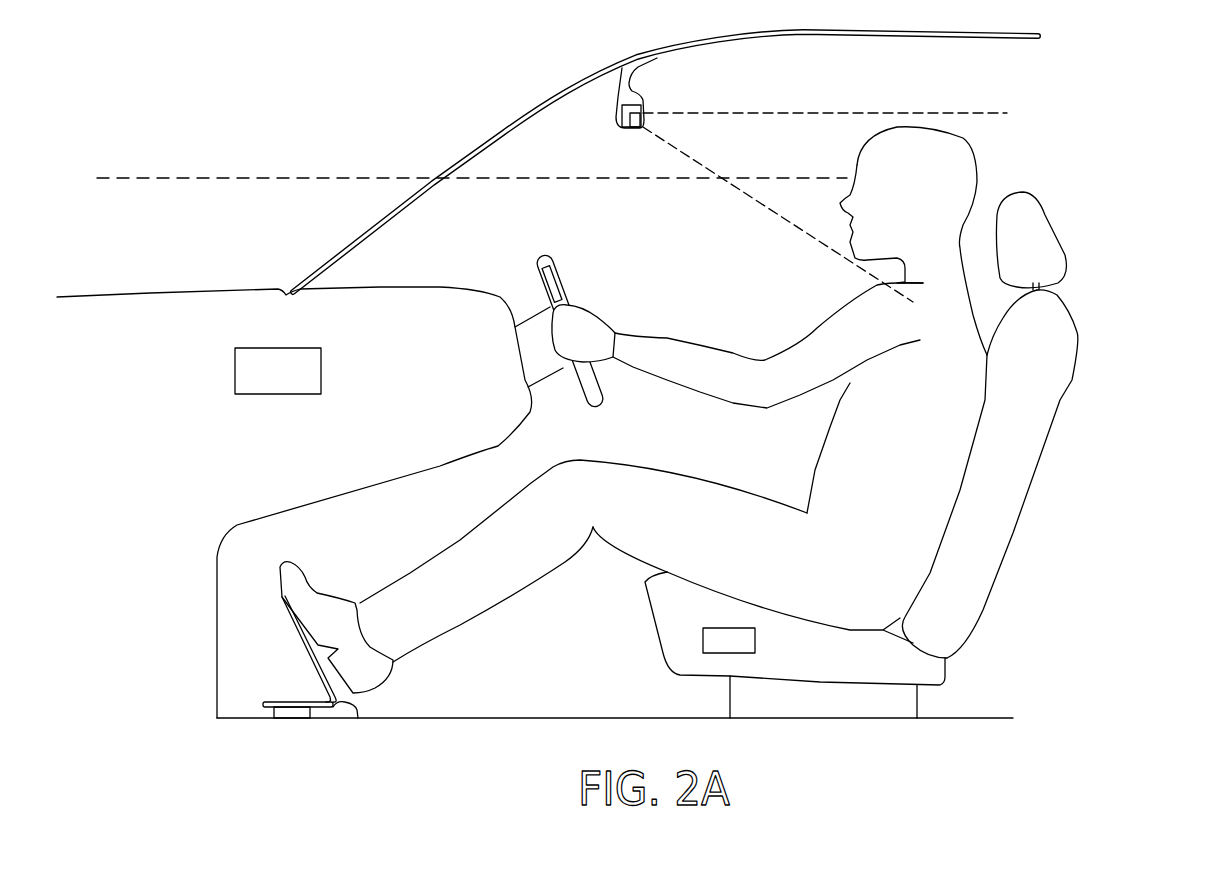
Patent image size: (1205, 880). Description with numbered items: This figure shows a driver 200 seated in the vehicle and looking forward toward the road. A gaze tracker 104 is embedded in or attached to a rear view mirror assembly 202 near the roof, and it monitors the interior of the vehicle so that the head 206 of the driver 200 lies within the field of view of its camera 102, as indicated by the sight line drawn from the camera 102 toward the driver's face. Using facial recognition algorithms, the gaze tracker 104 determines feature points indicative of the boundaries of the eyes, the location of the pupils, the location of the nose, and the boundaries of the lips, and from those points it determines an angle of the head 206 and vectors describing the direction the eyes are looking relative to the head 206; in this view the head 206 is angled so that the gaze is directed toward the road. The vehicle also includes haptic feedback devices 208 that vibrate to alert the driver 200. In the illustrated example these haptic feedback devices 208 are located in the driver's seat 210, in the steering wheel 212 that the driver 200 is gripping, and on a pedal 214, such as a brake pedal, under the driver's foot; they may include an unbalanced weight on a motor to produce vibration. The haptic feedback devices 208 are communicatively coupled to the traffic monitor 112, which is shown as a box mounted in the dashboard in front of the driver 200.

The camera 102 is at (643, 118).
The gaze tracker 104 is at (617, 115).
The traffic monitor 112 is at (283, 395).
The driver 200 is at (963, 490).
The rear view mirror assembly 202 is at (632, 82).
The head 206 is at (975, 172).
The haptic feedback devices 208 is at (560, 278).
The driver's seat 210 is at (1073, 379).
The steering wheel 212 is at (544, 250).
The pedal 214 is at (358, 718).